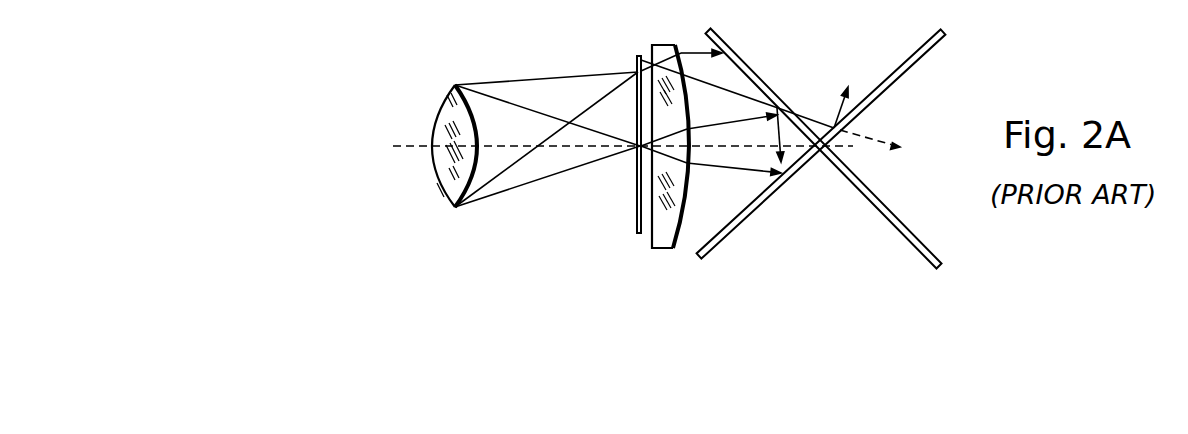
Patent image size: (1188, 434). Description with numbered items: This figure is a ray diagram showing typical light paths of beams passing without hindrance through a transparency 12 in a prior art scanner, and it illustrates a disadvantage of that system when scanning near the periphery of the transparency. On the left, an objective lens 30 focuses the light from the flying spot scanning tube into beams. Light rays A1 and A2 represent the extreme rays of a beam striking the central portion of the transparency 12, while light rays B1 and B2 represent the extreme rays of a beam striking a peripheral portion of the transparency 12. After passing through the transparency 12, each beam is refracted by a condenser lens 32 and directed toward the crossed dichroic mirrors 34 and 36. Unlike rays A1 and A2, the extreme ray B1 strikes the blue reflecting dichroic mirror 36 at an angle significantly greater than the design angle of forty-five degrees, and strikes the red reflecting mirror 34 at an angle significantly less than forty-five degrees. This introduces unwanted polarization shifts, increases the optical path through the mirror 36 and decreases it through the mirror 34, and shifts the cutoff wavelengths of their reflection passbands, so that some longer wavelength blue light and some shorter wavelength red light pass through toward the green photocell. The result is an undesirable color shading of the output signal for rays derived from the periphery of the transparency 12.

The objective lens 30 is at (441, 120).
The transparency 12 is at (636, 212).
The condenser lens 32 is at (657, 250).
The red reflecting mirror 34 is at (727, 233).
The blue reflecting dichroic mirror 36 is at (907, 237).
The light ray A1 is at (517, 188).
The light ray A2 is at (510, 104).
The extreme ray B1 is at (563, 73).
The light ray B2 is at (612, 94).